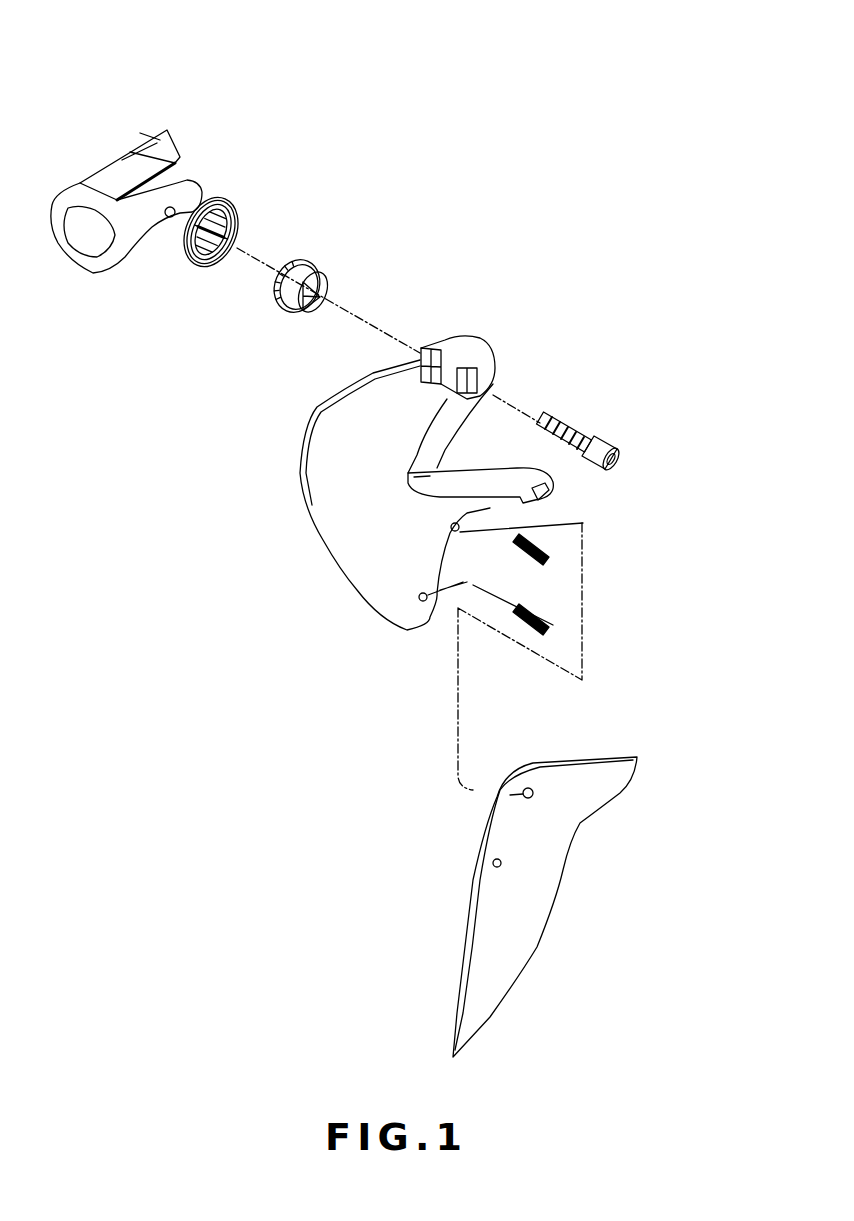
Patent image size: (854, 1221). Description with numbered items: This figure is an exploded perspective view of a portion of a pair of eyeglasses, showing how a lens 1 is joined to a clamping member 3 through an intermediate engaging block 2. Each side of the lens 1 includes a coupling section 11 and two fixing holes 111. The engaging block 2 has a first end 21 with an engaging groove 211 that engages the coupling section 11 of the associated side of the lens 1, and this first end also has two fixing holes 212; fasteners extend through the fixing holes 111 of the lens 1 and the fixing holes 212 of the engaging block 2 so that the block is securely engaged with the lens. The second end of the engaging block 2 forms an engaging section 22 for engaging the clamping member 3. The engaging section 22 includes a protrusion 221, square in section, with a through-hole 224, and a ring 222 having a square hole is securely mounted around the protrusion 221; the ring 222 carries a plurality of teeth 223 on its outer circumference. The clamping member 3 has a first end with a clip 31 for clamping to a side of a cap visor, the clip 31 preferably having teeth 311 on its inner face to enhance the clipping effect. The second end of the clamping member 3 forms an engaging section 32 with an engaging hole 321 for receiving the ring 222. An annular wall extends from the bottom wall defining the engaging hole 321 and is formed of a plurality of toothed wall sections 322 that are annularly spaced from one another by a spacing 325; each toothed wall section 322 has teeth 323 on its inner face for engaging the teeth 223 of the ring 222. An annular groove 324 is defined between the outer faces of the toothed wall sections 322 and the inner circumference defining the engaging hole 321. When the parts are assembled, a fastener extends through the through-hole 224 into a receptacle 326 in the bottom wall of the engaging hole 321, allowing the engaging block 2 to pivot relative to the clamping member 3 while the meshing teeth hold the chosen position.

The lens 1 is at (415, 907).
The coupling section 11 is at (480, 840).
The fixing holes 111 is at (523, 794).
The engaging block 2 is at (514, 328).
The first end of engaging block 21 is at (490, 508).
The engaging groove 211 is at (545, 490).
The fixing holes 212 is at (458, 528).
The engaging section 22 is at (460, 333).
The protrusion 221 is at (437, 348).
The ring 222 is at (333, 263).
The teeth 223 is at (302, 258).
The through-hole 224 is at (493, 368).
The clamping member 3 is at (242, 161).
The clip 31 is at (68, 190).
The teeth 311 is at (93, 200).
The engaging section 32 is at (160, 257).
The engaging hole 321 is at (210, 186).
The toothed wall sections 322 is at (207, 280).
The teeth 323 is at (193, 273).
The annular groove 324 is at (237, 200).
The spacing 325 is at (238, 222).
The receptacle 326 is at (143, 245).